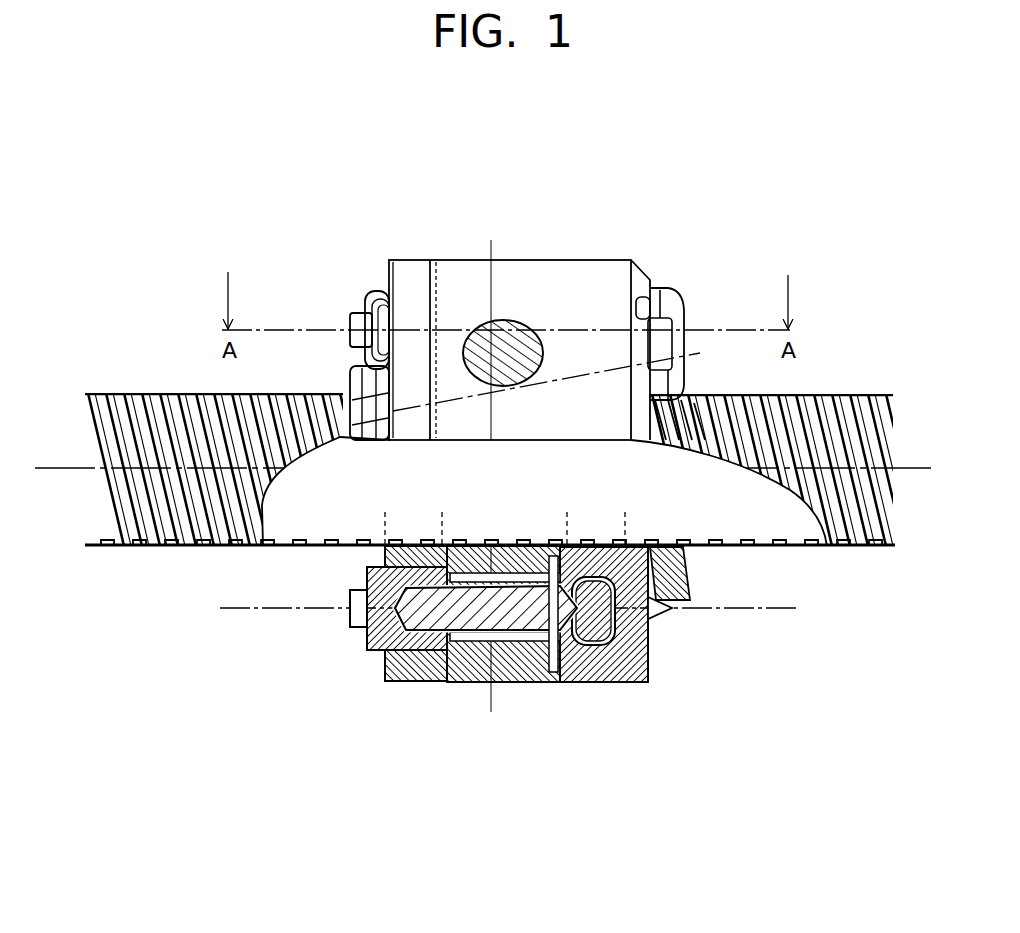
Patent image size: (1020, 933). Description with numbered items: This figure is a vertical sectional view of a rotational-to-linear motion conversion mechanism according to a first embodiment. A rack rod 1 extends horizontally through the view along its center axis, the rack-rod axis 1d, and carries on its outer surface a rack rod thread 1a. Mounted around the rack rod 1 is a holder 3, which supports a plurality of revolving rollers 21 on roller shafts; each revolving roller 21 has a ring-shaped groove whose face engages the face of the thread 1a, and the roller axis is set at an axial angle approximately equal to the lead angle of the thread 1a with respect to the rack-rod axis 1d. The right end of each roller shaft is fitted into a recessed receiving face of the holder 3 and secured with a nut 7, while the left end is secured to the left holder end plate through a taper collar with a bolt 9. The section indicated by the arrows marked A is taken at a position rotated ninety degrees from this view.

The rack rod 1 is at (753, 548).
The rack rod thread 1a is at (241, 546).
The rack-rod axis 1d is at (50, 465).
The holder 3 is at (639, 259).
The nut 7 is at (684, 309).
The bolt 9 is at (348, 325).
The revolving roller 21 is at (478, 694).